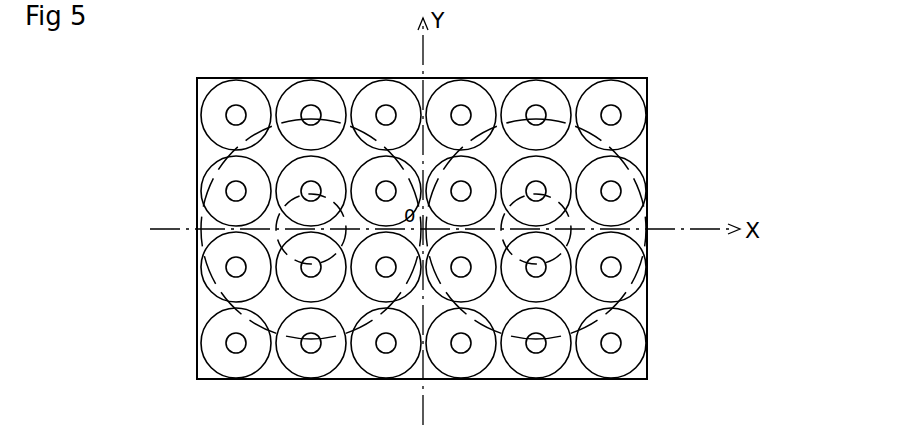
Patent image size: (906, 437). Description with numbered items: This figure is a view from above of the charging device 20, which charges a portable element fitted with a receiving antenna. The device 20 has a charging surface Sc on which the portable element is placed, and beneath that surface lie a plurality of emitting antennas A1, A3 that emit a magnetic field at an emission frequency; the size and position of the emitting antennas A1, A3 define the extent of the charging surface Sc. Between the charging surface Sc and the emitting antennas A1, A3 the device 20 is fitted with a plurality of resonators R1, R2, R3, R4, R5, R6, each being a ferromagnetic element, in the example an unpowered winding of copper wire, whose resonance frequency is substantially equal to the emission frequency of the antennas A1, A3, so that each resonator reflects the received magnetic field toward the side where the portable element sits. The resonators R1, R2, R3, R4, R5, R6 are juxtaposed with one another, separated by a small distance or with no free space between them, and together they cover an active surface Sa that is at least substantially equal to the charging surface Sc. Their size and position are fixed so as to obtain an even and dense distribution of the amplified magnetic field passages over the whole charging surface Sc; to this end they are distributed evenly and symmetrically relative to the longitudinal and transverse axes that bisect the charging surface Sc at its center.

The charging device 20 is at (648, 78).
The emitting antenna A1 is at (273, 155).
The emitting antenna A3 is at (572, 155).
The resonator R1 is at (213, 187).
The resonator R2 is at (293, 178).
The resonator R3 is at (383, 168).
The resonator R4 is at (460, 168).
The resonator R5 is at (555, 180).
The resonator R6 is at (632, 183).
The charging surface Sc is at (645, 299).
The active surface Sa is at (634, 356).